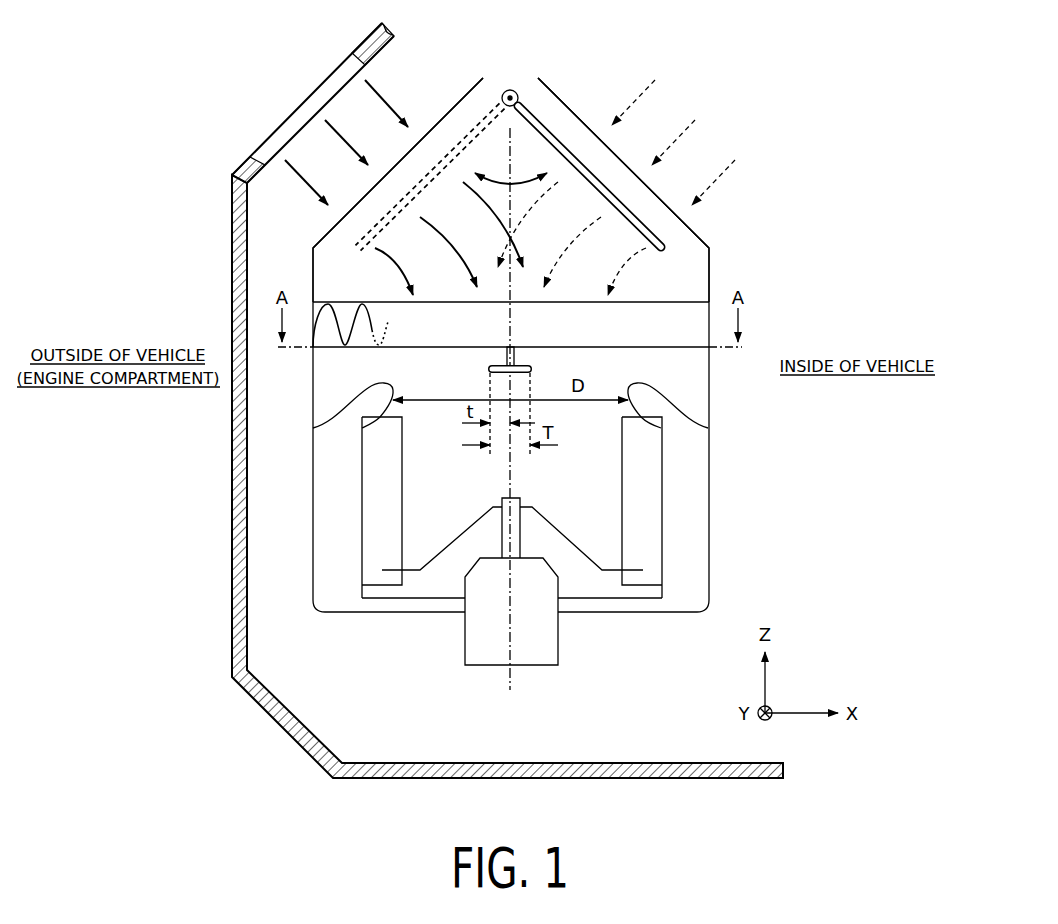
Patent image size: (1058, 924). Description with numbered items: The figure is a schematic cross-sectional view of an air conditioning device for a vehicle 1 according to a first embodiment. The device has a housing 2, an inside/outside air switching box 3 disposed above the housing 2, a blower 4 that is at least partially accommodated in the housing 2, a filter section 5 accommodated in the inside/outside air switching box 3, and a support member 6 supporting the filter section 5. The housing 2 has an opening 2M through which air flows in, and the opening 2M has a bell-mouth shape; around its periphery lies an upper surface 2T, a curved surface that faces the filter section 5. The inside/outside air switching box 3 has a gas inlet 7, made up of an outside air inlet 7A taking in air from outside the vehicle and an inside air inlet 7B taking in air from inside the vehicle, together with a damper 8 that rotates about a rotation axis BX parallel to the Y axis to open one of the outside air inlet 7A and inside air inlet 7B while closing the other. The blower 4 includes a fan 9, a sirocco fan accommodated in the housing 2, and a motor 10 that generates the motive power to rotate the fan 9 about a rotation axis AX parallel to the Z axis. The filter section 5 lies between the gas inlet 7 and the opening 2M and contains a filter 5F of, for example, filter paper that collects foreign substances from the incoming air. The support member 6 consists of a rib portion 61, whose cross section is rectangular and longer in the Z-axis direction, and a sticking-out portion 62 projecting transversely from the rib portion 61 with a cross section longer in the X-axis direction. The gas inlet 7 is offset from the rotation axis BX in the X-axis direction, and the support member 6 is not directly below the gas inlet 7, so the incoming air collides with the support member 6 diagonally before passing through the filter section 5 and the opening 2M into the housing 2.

The air conditioning device for a vehicle 1 is at (741, 71).
The housing 2 is at (697, 503).
The upper surface 2T is at (388, 383).
The opening 2M is at (630, 383).
The inside/outside air switching box 3 is at (711, 268).
The blower 4 is at (514, 596).
The filter section 5 is at (648, 305).
The filter 5F is at (342, 316).
The support member 6 is at (509, 384).
The rib portion 61 is at (505, 350).
The sticking-out portion 62 is at (491, 366).
The gas inlet 7 is at (511, 153).
The outside air inlet 7A is at (442, 118).
The inside air inlet 7B is at (581, 120).
The damper 8 is at (627, 224).
The fan 9 is at (648, 453).
The motor 10 is at (552, 650).
The rotation axis BX is at (510, 90).
The rotation axis AX is at (517, 470).